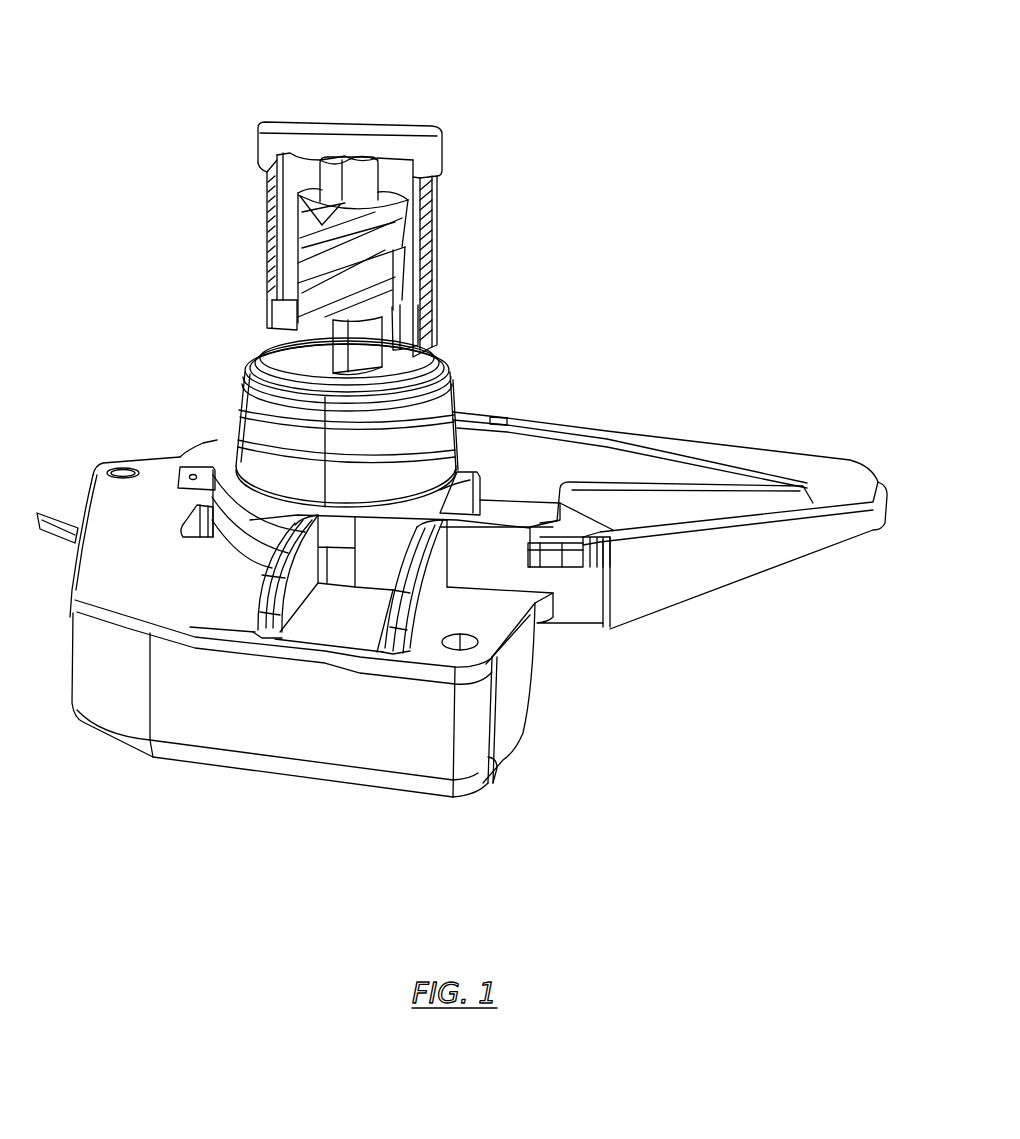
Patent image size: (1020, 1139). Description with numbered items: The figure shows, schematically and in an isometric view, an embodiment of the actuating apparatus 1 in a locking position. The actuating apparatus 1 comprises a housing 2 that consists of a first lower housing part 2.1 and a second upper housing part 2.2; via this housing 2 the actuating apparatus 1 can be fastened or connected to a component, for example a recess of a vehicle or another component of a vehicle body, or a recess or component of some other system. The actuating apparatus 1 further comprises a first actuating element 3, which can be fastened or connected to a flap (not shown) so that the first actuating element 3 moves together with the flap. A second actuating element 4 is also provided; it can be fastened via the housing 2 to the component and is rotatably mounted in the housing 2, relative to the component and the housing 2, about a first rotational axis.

The actuating apparatus 1 is at (131, 249).
The housing 2 is at (547, 715).
The first lower housing part 2.1 is at (497, 735).
The second upper housing part 2.2 is at (502, 613).
The first actuating element 3 is at (404, 133).
The second actuating element 4 is at (382, 311).